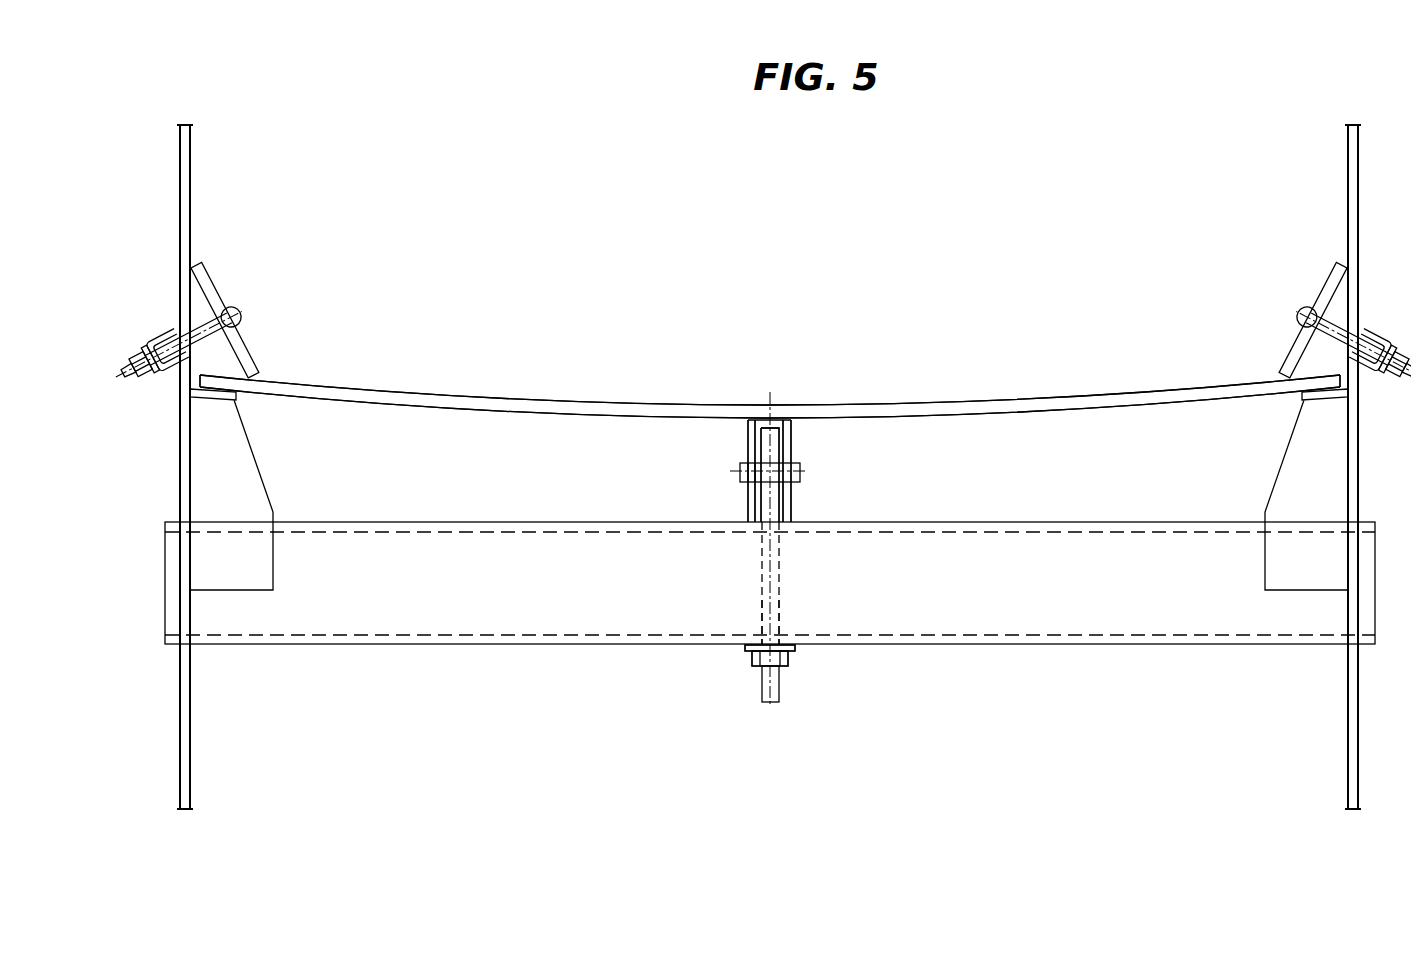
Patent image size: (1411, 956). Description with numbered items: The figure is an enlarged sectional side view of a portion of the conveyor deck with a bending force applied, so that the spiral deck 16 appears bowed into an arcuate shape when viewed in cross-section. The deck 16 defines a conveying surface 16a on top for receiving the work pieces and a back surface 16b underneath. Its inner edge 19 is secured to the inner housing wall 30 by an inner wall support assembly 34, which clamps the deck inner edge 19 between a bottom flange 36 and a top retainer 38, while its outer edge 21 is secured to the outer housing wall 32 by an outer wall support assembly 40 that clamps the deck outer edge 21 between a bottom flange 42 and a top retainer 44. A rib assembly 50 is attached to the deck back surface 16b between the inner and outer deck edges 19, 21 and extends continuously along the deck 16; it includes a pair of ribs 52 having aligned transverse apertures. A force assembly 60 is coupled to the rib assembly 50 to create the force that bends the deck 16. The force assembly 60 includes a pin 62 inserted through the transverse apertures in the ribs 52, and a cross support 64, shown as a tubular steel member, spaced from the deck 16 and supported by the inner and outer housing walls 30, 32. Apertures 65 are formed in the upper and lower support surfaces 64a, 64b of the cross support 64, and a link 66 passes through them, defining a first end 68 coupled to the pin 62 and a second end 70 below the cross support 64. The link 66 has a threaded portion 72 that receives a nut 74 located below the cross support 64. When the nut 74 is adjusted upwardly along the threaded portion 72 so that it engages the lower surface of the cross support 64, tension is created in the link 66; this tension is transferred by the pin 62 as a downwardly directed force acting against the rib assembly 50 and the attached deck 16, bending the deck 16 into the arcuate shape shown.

The spiral deck 16 is at (1132, 388).
The conveying surface 16a is at (1050, 399).
The back surface 16b is at (1050, 412).
The inner edge 19 is at (200, 386).
The outer edge 21 is at (1342, 381).
The inner housing wall 30 is at (180, 214).
The outer housing wall 32 is at (1358, 186).
The inner wall support assembly 34 is at (130, 323).
The bottom flange 36 is at (210, 400).
The top retainer 38 is at (208, 290).
The outer wall support assembly 40 is at (1300, 268).
The bottom flange 42 is at (1318, 399).
The top retainer 44 is at (1330, 265).
The rib assembly 50 is at (715, 446).
The ribs 52 is at (752, 432).
The force assembly 60 is at (732, 670).
The pin 62 is at (785, 470).
The cross support 64 is at (432, 620).
The upper support surface 64a is at (506, 530).
The lower support surface 64b is at (538, 648).
The apertures 65 is at (780, 530).
The link 66 is at (772, 505).
The first end 68 is at (757, 478).
The second end 70 is at (786, 660).
The threaded portion 72 is at (758, 618).
The nut 74 is at (762, 652).